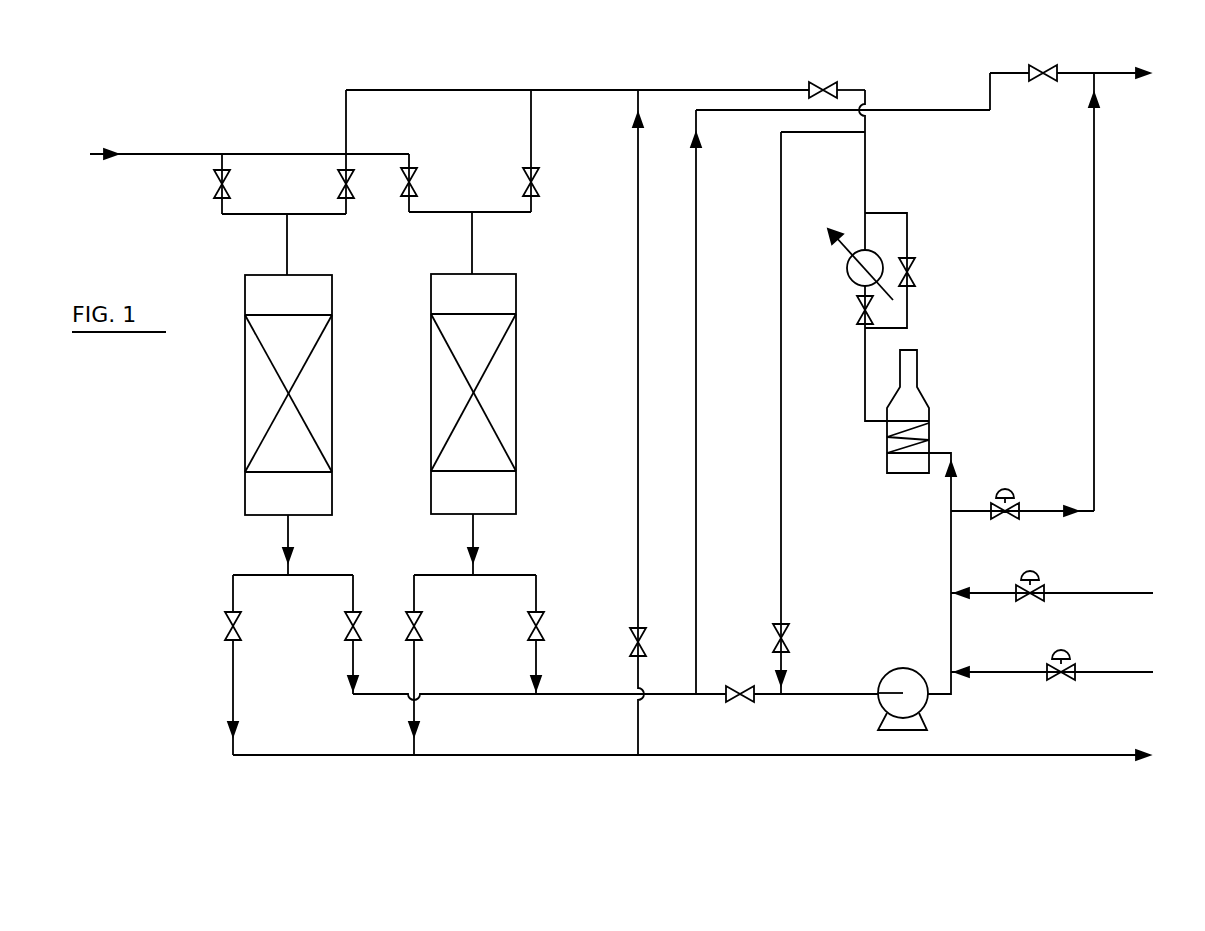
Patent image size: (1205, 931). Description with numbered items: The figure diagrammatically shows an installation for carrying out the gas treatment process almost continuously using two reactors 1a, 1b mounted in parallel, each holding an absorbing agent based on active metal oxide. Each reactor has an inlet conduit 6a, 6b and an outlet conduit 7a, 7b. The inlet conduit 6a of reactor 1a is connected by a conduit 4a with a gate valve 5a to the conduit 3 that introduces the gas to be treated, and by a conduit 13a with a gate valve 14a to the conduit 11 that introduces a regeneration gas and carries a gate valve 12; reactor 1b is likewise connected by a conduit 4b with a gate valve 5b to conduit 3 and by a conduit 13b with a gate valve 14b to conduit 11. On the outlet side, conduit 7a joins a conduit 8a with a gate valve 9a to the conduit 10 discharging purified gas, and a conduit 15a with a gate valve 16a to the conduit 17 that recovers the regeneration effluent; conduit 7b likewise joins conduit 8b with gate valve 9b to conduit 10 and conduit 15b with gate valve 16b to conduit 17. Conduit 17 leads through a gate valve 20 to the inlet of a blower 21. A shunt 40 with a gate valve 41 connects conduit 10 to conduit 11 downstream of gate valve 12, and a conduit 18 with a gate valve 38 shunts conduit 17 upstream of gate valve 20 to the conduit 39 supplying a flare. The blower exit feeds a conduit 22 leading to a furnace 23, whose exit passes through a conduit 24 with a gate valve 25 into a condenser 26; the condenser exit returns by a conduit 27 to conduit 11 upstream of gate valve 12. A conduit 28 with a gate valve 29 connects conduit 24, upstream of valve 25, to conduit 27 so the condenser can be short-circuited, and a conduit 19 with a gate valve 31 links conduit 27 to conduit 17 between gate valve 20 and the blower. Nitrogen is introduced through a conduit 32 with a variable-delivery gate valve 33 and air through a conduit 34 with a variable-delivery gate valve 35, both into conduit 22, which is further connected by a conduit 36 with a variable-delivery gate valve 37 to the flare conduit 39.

The reactor 1a is at (244, 405).
The reactor 1b is at (517, 395).
The conduit for introducing the gas to be treated 3 is at (130, 152).
The conduit 4a is at (220, 160).
The conduit 4b is at (412, 153).
The gate valve 5a is at (220, 200).
The gate valve 5b is at (417, 182).
The inlet conduit 6a is at (286, 250).
The inlet conduit 6b is at (474, 246).
The outlet conduit 7a is at (286, 540).
The outlet conduit 7b is at (475, 540).
The conduit 8a is at (231, 602).
The conduit 8b is at (416, 592).
The gate valve 9a is at (231, 645).
The gate valve 9b is at (418, 640).
The conduit of discharge of the purified gas 10 is at (480, 757).
The conduit for introducing a regeneration gas 11 is at (550, 90).
The gate valve 12 is at (826, 84).
The conduit 13a is at (344, 116).
The conduit 13b is at (533, 126).
The gate valve 14a is at (352, 196).
The gate valve 14b is at (535, 195).
The conduit 15a is at (351, 602).
The conduit 15b is at (538, 586).
The gate valve 16a is at (351, 645).
The gate valve 16b is at (540, 636).
The conduit of recovery of the regeneration effluent 17 is at (556, 695).
The conduit 18 is at (698, 505).
The conduit 19 is at (779, 212).
The gate valve 20 is at (738, 702).
The blower 21 is at (905, 685).
The conduit 22 is at (949, 548).
The furnace 23 is at (930, 388).
The conduit 24 is at (863, 385).
The gate valve 25 is at (857, 312).
The condenser 26 is at (848, 276).
The conduit 27 is at (867, 168).
The conduit 28 is at (909, 305).
The gate valve 29 is at (915, 268).
The gate valve 31 is at (790, 640).
The conduit for introducing nitrogen 32 is at (1095, 592).
The gate valve of variable delivery 33 is at (1030, 602).
The conduit for introducing air 34 is at (1130, 674).
The gate valve of variable delivery 35 is at (1058, 682).
The conduit 36 is at (1096, 470).
The gate valve of variable delivery 37 is at (1010, 495).
The gate valve 38 is at (1043, 84).
The conduit for supplying a flare 39 is at (1115, 78).
The shunt 40 is at (636, 282).
The gate valve 41 is at (648, 642).